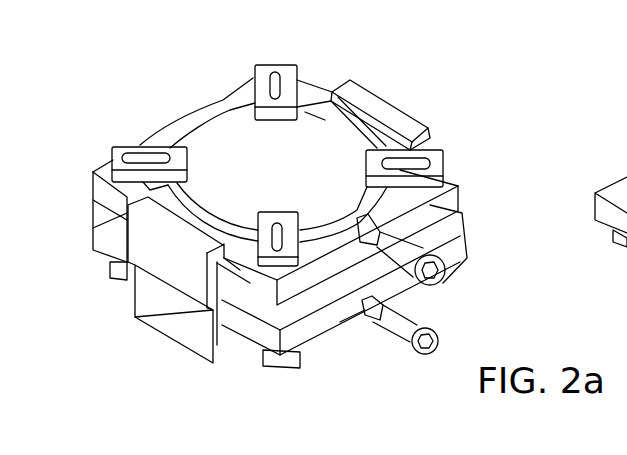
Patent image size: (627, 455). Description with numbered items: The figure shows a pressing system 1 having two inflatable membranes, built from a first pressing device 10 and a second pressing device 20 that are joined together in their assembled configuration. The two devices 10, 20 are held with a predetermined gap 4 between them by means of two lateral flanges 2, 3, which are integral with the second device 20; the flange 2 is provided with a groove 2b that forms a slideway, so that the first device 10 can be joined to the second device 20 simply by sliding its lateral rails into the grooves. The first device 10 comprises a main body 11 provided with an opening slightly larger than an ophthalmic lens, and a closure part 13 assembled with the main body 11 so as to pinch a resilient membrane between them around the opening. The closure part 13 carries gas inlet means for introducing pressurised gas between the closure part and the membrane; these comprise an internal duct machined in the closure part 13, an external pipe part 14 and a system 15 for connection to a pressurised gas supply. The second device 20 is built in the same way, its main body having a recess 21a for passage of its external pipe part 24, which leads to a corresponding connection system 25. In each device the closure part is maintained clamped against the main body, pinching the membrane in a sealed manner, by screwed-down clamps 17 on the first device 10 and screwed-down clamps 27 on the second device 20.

The pressing system 1 is at (146, 99).
The lateral flange 2 is at (162, 330).
The groove 2b is at (230, 275).
The lateral flange 3 is at (383, 100).
The predetermined gap 4 is at (95, 211).
The first pressing device 10 is at (210, 102).
The main body 11 is at (455, 186).
The closure part 13 is at (315, 132).
The external pipe part 14 is at (456, 218).
The connection system 15 is at (462, 262).
The screwed-down clamp 17 is at (270, 63).
The second pressing device 20 is at (327, 338).
The recess 21a is at (360, 305).
The external pipe part 24 is at (372, 318).
The connection system 25 is at (432, 312).
The screwed-down clamp 27 is at (103, 268).